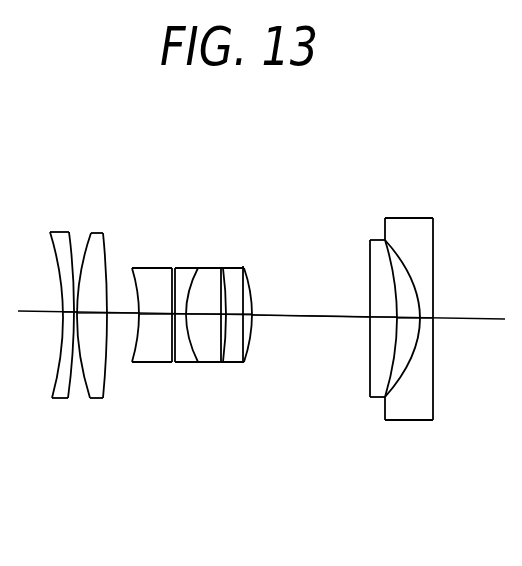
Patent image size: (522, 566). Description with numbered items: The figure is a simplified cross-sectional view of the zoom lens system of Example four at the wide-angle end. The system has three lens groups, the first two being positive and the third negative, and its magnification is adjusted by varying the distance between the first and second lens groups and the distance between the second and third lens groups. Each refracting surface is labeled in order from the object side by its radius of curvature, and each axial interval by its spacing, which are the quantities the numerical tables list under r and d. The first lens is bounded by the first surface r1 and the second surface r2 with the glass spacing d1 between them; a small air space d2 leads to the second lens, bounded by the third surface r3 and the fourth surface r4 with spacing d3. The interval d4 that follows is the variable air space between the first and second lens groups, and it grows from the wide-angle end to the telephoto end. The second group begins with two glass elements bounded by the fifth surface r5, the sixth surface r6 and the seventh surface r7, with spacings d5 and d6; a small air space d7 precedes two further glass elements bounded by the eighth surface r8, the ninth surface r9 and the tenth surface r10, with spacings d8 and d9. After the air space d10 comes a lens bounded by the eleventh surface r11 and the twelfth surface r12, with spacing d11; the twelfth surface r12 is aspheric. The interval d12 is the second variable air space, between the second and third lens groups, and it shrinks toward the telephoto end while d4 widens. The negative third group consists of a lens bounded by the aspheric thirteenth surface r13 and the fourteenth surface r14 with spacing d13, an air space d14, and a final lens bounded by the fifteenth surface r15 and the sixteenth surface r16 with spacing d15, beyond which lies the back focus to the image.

The radius of curvature of first lens surface r1 is at (66, 253).
The radius of curvature of second lens surface r2 is at (86, 272).
The radius of curvature of third lens surface r3 is at (103, 253).
The radius of curvature of fourth lens surface r4 is at (127, 272).
The radius of curvature of fifth lens surface r5 is at (153, 235).
The radius of curvature of sixth lens surface r6 is at (182, 254).
The radius of curvature of seventh lens surface r7 is at (196, 235).
The radius of curvature of eighth lens surface r8 is at (214, 254).
The radius of curvature of ninth lens surface r9 is at (242, 235).
The radius of curvature of tenth lens surface r10 is at (261, 254).
The radius of curvature of eleventh lens surface r11 is at (282, 235).
The radius of curvature of twelfth lens surface r12 is at (294, 254).
The radius of curvature of thirteenth lens surface r13 is at (374, 253).
The radius of curvature of fourteenth lens surface r14 is at (395, 271).
The radius of curvature of fifteenth lens surface r15 is at (409, 253).
The radius of curvature of sixteenth lens surface r16 is at (439, 283).
The spacing between first and second lens surfaces d1 is at (71, 401).
The air space between second and third lens surfaces d2 is at (89, 419).
The spacing between third and fourth lens surfaces d3 is at (102, 401).
The variable air space between first and second lens groups d4 is at (129, 420).
The spacing between fifth and sixth lens surfaces d5 is at (156, 402).
The spacing between sixth and seventh lens surfaces d6 is at (184, 420).
The air space between seventh and eighth lens surfaces d7 is at (196, 402).
The spacing between eighth and ninth lens surfaces d8 is at (213, 420).
The spacing between ninth and tenth lens surfaces d9 is at (243, 402).
The air space between tenth and eleventh lens surfaces d10 is at (268, 420).
The spacing between eleventh and twelfth lens surfaces d11 is at (288, 402).
The variable air space between second and third lens groups d12 is at (311, 421).
The spacing between thirteenth and fourteenth lens surfaces d13 is at (388, 403).
The air space between fourteenth and fifteenth lens surfaces d14 is at (410, 422).
The spacing between fifteenth and sixteenth lens surfaces d15 is at (432, 404).